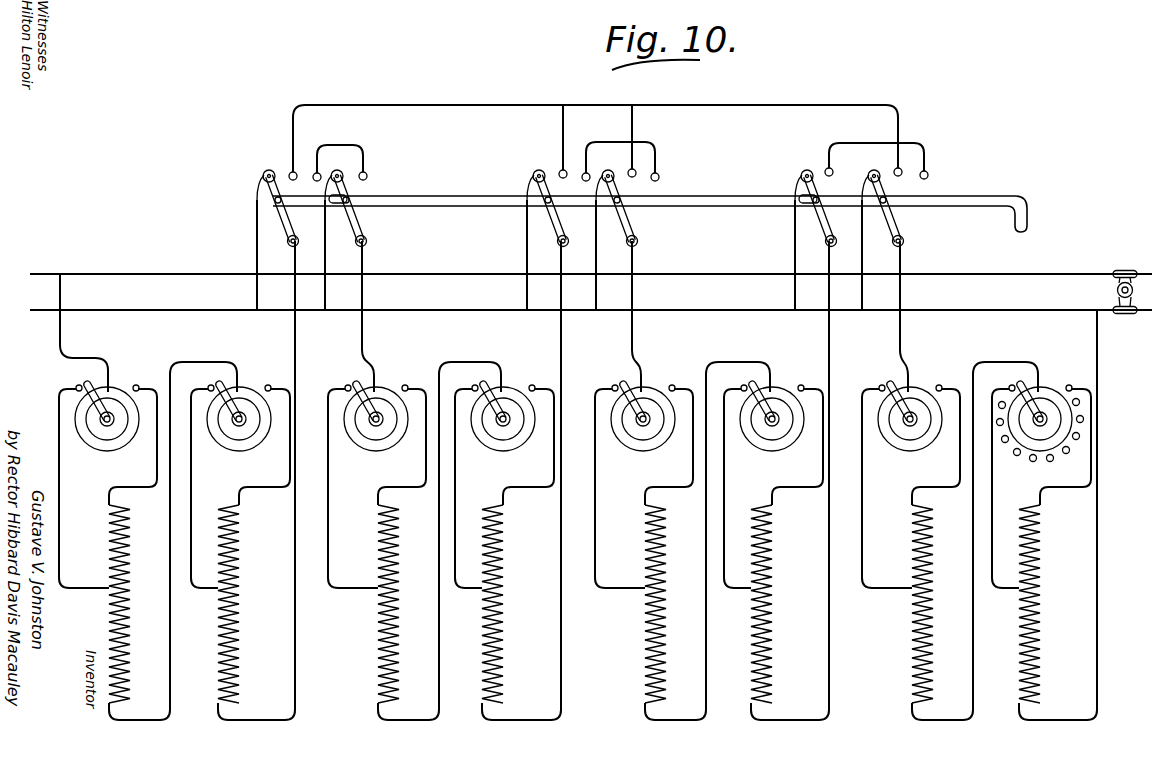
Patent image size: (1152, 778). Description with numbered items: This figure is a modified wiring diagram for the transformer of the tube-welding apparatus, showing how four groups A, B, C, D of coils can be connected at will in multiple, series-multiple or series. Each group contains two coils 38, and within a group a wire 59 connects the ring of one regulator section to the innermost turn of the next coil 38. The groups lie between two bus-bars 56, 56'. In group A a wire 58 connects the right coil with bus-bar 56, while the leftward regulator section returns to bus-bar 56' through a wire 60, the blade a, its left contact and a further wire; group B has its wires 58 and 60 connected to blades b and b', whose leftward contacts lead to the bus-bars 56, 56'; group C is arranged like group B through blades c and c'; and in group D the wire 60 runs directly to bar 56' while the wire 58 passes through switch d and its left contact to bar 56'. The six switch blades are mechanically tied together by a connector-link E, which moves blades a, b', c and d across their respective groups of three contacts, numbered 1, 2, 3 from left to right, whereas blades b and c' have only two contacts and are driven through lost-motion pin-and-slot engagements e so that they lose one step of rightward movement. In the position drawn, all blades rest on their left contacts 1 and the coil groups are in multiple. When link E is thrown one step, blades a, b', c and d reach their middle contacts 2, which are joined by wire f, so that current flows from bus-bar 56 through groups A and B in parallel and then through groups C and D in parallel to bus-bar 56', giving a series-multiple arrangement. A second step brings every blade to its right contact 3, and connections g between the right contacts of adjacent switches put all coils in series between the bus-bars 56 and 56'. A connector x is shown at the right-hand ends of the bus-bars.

The coil 38 is at (222, 716).
The bus-bar 56 is at (591, 324).
The bus-bar 56' is at (591, 262).
The wire 58 is at (845, 699).
The wire 59 is at (975, 669).
The wire 60 is at (62, 295).
The connector x is at (1117, 288).
The wire f is at (533, 105).
The connection g is at (346, 146).
The lost-motion pin-and-slot engagement e is at (352, 196).
The connector-link E is at (456, 200).
The switch blade d is at (284, 208).
The switch blade c is at (452, 208).
The switch blade b is at (721, 208).
The switch blade a is at (883, 208).
The contact 1 is at (572, 163).
The contact 2 is at (596, 167).
The contact 3 is at (622, 168).
The coil group A is at (979, 521).
The coil group B is at (712, 521).
The coil group C is at (444, 521).
The coil group D is at (177, 522).